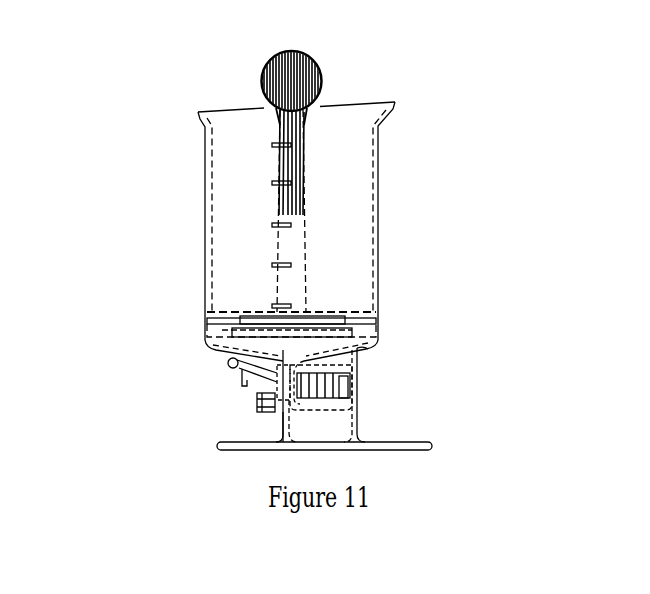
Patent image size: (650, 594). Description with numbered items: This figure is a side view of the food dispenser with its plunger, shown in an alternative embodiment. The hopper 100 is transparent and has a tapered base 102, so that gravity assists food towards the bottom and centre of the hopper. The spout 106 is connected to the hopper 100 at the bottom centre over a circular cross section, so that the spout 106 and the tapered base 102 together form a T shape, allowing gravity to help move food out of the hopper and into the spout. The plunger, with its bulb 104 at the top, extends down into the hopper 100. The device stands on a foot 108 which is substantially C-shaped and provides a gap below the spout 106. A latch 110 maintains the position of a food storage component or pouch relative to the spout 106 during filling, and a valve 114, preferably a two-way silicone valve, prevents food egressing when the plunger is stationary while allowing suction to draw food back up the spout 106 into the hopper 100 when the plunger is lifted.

The hopper 100 is at (367, 233).
The tapered base 102 is at (380, 332).
The pipette bulb 104 is at (318, 63).
The spout 106 is at (278, 410).
The foot 108 is at (377, 452).
The latch 110 is at (229, 367).
The valve 114 is at (258, 404).